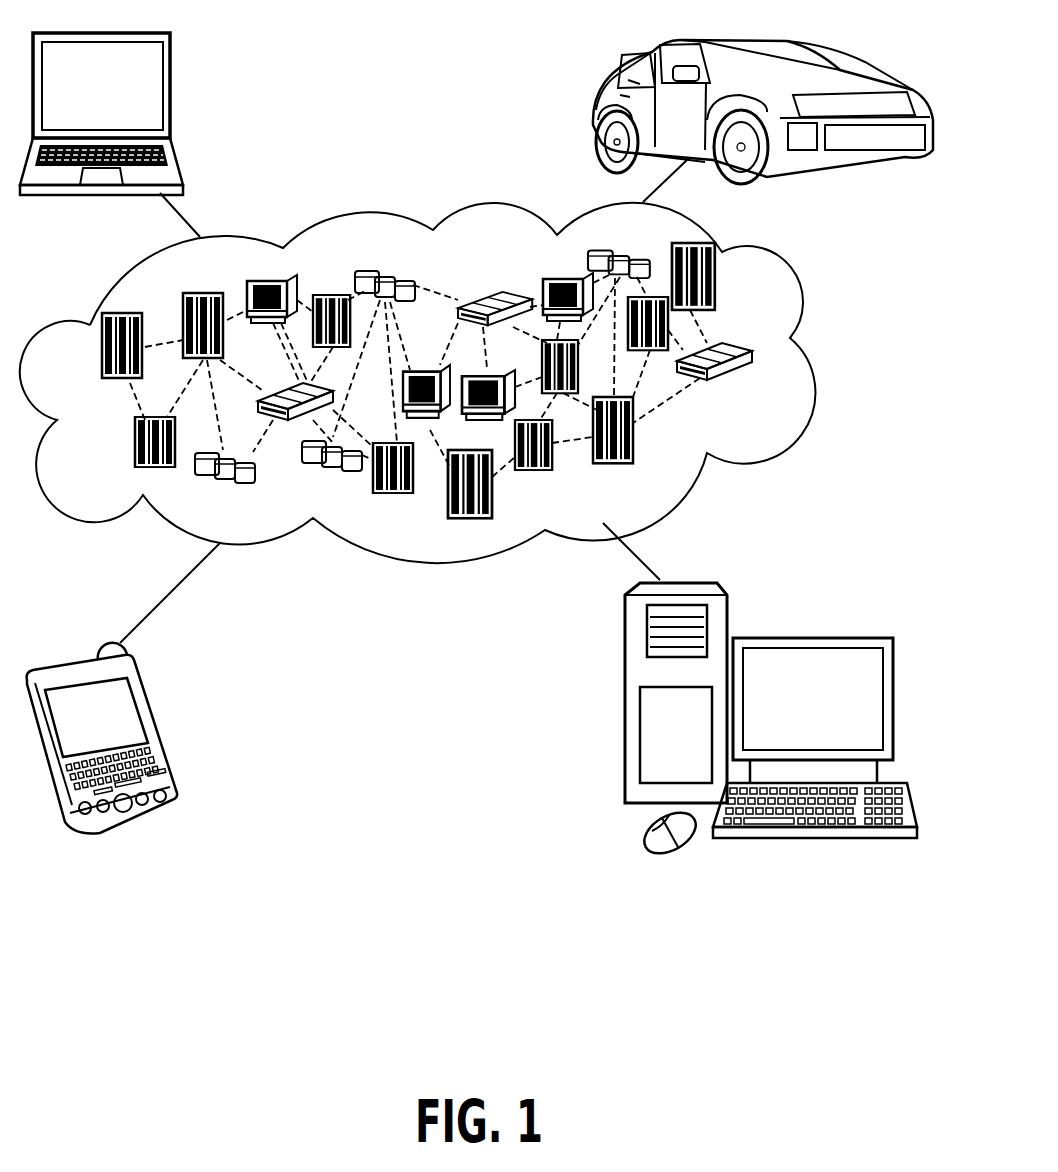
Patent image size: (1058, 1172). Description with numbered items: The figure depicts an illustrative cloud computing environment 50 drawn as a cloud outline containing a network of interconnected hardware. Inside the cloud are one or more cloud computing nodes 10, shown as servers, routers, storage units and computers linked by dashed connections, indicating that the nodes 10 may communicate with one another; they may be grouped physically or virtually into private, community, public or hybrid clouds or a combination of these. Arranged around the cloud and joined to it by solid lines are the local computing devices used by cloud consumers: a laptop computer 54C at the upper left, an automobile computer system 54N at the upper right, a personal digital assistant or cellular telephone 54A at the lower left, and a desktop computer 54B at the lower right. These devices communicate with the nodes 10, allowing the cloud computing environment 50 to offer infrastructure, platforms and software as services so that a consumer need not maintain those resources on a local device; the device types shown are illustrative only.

The cloud computing nodes 10 is at (803, 407).
The cloud computing environment 50 is at (810, 358).
The personal digital assistant (PDA) or cellular telephone 54A is at (160, 728).
The desktop computer 54B is at (810, 637).
The laptop computer 54C is at (172, 95).
The automobile computer system 54N is at (597, 110).